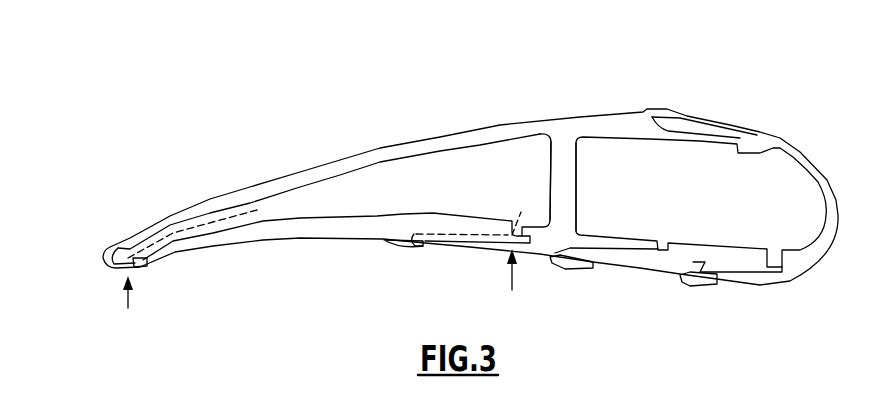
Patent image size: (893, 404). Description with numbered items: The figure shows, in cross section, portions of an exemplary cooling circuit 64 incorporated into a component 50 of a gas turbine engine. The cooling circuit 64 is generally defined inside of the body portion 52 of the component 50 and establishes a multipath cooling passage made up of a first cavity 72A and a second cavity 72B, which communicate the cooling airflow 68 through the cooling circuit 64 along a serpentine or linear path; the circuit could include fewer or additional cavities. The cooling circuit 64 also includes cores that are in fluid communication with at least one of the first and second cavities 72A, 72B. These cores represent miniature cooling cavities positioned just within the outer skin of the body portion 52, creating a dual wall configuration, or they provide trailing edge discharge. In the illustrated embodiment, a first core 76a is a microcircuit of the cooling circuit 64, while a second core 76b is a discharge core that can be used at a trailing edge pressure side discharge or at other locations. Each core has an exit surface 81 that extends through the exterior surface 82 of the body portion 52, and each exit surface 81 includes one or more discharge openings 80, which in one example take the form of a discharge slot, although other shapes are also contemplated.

The component 50 is at (502, 84).
The body portion 52 is at (420, 146).
The cooling circuit 64 is at (572, 126).
The cooling airflow 68 is at (260, 211).
The first cavity 72A is at (528, 194).
The second cavity 72B is at (717, 203).
The first core 76a is at (512, 290).
The second core 76b is at (128, 308).
The discharge opening 80 is at (112, 272).
The exit surface 81 is at (145, 268).
The exterior surface 82 is at (188, 256).